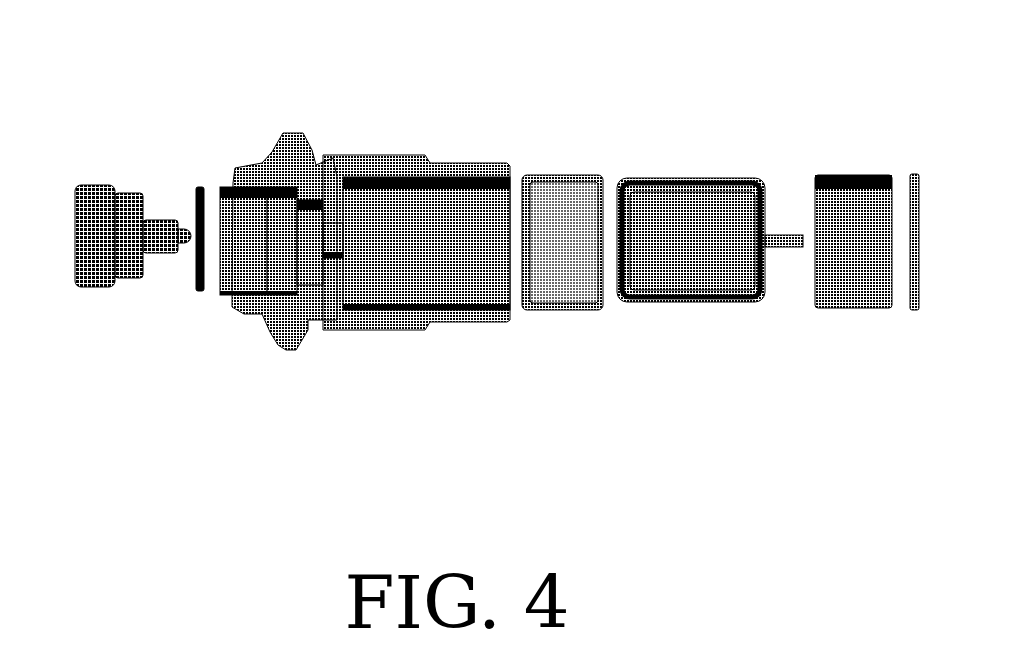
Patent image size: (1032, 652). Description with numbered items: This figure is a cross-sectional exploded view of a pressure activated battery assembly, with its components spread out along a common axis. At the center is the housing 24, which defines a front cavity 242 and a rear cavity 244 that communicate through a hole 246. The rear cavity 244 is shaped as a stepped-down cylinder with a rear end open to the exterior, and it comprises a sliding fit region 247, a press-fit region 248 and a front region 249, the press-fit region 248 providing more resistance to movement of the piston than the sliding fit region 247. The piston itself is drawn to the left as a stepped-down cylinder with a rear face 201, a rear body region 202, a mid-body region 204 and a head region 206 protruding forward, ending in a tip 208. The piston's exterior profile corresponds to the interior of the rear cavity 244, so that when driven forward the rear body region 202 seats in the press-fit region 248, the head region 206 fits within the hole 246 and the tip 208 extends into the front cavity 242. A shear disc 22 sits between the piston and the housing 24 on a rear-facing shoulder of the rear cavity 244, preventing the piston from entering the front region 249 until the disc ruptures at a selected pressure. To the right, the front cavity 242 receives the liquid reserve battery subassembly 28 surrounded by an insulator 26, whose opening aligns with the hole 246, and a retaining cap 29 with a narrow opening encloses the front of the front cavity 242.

The rear face 201 is at (108, 231).
The rear body region 202 is at (105, 183).
The mid-body region 204 is at (123, 280).
The head region 206 is at (160, 218).
The tip 208 is at (183, 250).
The shear disc 22 is at (198, 185).
The housing 24 is at (365, 259).
The front cavity 242 is at (473, 300).
The rear cavity 244 is at (257, 192).
The hole 246 is at (333, 223).
The sliding fit region 247 is at (250, 293).
The press-fit region 248 is at (282, 293).
The front region 249 is at (318, 287).
The insulator 26 is at (830, 174).
The liquid reserve battery subassembly 28 is at (703, 302).
The retaining cap 29 is at (912, 173).